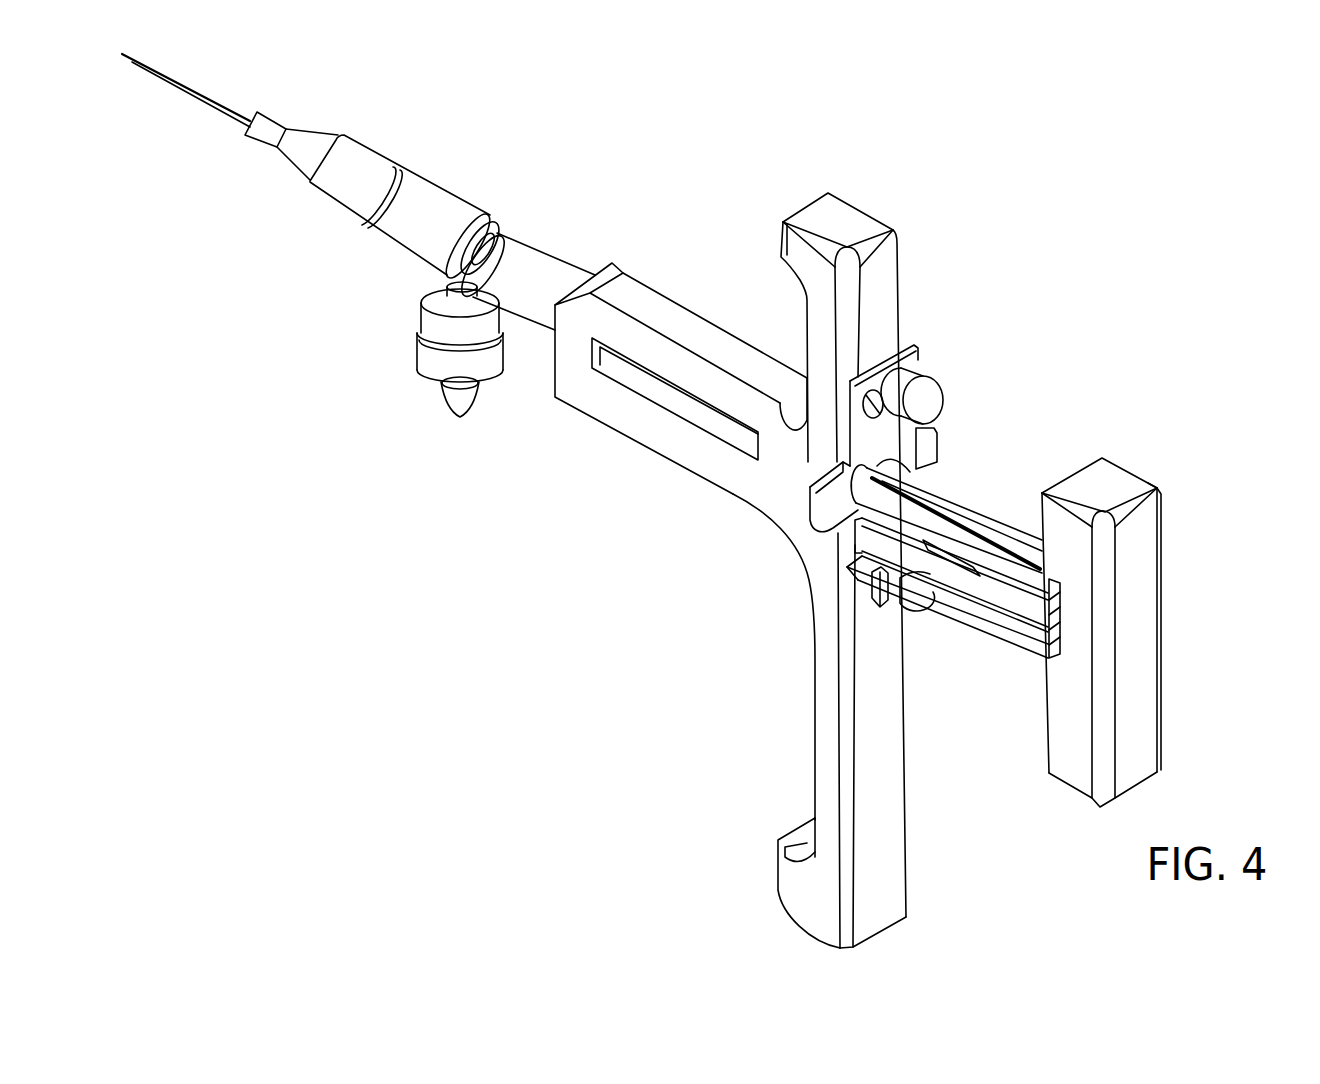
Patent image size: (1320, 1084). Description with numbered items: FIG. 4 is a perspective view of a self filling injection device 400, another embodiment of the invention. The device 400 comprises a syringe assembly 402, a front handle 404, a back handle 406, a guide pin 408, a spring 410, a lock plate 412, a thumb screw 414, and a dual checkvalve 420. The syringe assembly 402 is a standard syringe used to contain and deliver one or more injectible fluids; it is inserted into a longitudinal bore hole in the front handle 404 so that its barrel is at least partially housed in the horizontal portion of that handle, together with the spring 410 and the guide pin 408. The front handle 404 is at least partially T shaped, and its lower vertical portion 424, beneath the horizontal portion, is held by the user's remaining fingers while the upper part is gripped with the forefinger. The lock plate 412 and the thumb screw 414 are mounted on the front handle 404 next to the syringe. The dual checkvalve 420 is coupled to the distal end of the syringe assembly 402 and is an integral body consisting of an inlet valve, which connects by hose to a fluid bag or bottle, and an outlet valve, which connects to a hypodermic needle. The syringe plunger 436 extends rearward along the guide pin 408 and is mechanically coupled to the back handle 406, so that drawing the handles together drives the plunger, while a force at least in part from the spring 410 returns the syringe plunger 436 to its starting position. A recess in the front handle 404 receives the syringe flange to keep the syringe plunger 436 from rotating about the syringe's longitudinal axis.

The self filling injection device 400 is at (1150, 102).
The syringe assembly 402 is at (372, 252).
The front handle 404 is at (793, 922).
The back handle 406 is at (1148, 617).
The guide pin 408 is at (1003, 623).
The spring 410 is at (632, 421).
The lock plate 412 is at (870, 432).
The thumb screw 414 is at (922, 366).
The dual checkvalve 420 is at (417, 345).
The vertical portion 424 is at (840, 213).
The syringe plunger 436 is at (950, 537).